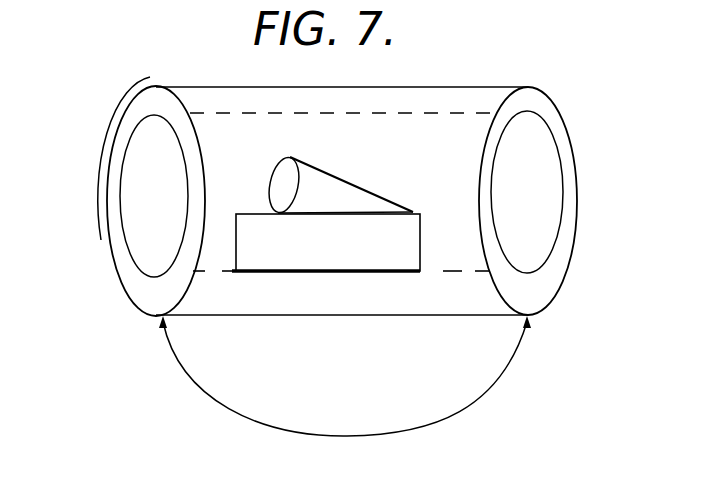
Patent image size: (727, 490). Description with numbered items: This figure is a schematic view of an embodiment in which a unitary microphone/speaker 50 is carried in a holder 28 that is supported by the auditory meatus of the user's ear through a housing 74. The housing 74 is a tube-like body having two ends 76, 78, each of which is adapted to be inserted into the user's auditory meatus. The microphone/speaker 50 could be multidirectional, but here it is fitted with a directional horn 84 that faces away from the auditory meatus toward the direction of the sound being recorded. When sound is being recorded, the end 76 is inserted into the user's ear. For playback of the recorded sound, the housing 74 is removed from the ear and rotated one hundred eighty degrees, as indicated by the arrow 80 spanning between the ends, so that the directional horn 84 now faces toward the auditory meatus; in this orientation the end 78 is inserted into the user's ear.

The housing 74 is at (447, 103).
The end 76 is at (567, 230).
The end 78 is at (110, 190).
The holder 28 is at (132, 317).
The microphone/speaker 50 is at (412, 220).
The directional horn 84 is at (330, 180).
The arrow 80 is at (448, 417).